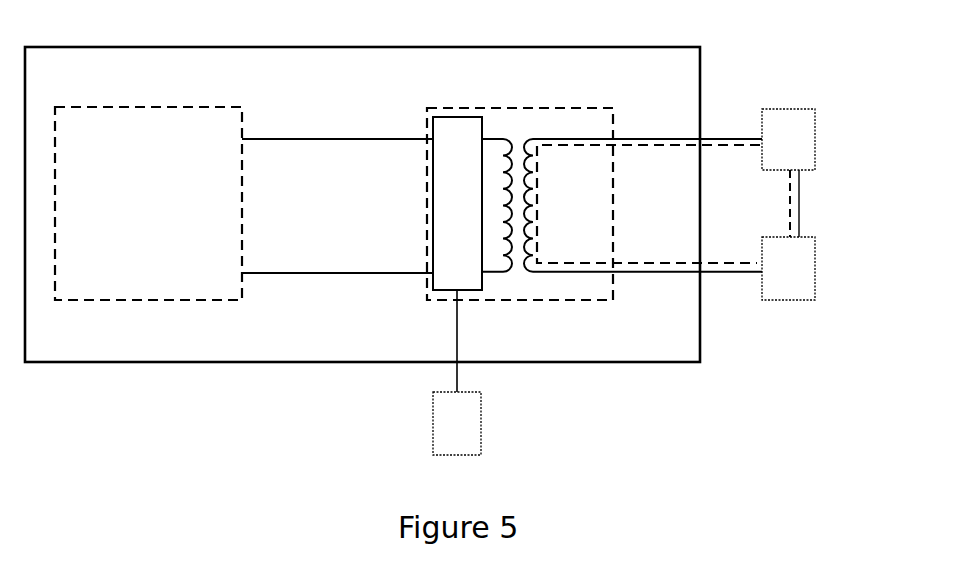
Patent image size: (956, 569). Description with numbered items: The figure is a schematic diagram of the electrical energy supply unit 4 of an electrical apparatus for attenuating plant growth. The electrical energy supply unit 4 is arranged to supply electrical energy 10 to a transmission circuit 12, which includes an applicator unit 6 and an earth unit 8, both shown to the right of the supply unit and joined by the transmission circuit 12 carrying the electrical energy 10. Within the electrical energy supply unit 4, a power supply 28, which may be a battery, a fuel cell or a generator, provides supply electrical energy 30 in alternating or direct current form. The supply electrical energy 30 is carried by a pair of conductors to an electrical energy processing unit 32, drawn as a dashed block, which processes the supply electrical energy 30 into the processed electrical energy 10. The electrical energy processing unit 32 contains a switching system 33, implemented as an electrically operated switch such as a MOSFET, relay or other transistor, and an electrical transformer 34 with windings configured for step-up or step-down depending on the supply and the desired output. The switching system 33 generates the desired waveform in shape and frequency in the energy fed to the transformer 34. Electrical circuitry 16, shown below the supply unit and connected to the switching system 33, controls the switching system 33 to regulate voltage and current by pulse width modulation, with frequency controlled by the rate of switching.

The electrical energy supply unit 4 is at (700, 47).
The applicator unit 6 is at (781, 156).
The earth unit 8 is at (781, 284).
The electrical energy 10 is at (792, 188).
The transmission circuit 12 is at (803, 223).
The electrical circuitry 16 is at (439, 430).
The power supply 28 is at (138, 219).
The supply electrical energy 30 is at (340, 139).
The electrical energy processing unit 32 is at (425, 132).
The switching system 33 is at (447, 245).
The electrical transformer 34 is at (517, 138).